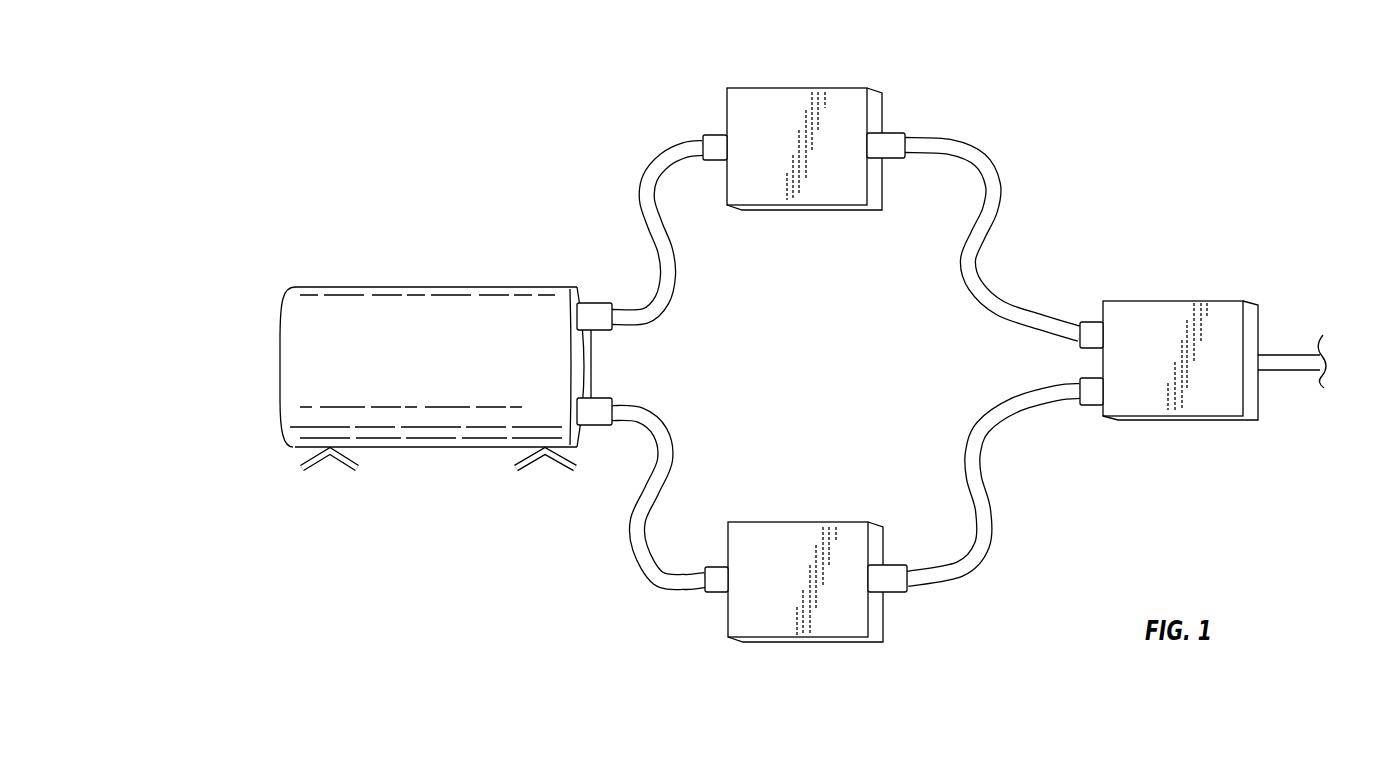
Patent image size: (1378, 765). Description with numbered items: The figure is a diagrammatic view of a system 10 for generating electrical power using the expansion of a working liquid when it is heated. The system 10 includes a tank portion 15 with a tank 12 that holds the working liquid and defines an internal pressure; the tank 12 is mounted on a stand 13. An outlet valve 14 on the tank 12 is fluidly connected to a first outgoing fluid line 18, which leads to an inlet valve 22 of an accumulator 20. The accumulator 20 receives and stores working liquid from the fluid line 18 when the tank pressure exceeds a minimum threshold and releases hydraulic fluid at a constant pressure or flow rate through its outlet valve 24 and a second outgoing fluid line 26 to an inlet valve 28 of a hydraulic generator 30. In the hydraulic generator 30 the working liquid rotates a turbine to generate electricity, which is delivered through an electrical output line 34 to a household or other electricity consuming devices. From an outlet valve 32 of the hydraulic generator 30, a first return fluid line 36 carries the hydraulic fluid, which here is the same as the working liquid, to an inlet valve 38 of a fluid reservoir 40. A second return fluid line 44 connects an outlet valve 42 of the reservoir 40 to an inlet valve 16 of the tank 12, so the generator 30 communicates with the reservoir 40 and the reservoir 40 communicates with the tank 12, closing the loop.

The system 10 is at (368, 128).
The tank 12 is at (345, 320).
The stand 13 is at (298, 458).
The outlet valve 14 is at (596, 305).
The tank portion 15 is at (247, 162).
The inlet valve 16 is at (600, 396).
The first outgoing fluid line 18 is at (641, 185).
The accumulator 20 is at (787, 102).
The inlet valve 22 is at (714, 136).
The outlet valve 24 is at (893, 135).
The second outgoing fluid line 26 is at (993, 180).
The inlet valve 28 is at (1088, 323).
The hydraulic generator 30 is at (1172, 303).
The outlet valve 32 is at (1098, 405).
The electrical output line 34 is at (1270, 355).
The first return fluid line 36 is at (965, 470).
The inlet valve 38 is at (892, 592).
The fluid reservoir 40 is at (790, 540).
The outlet valve 42 is at (716, 590).
The second return fluid line 44 is at (675, 460).